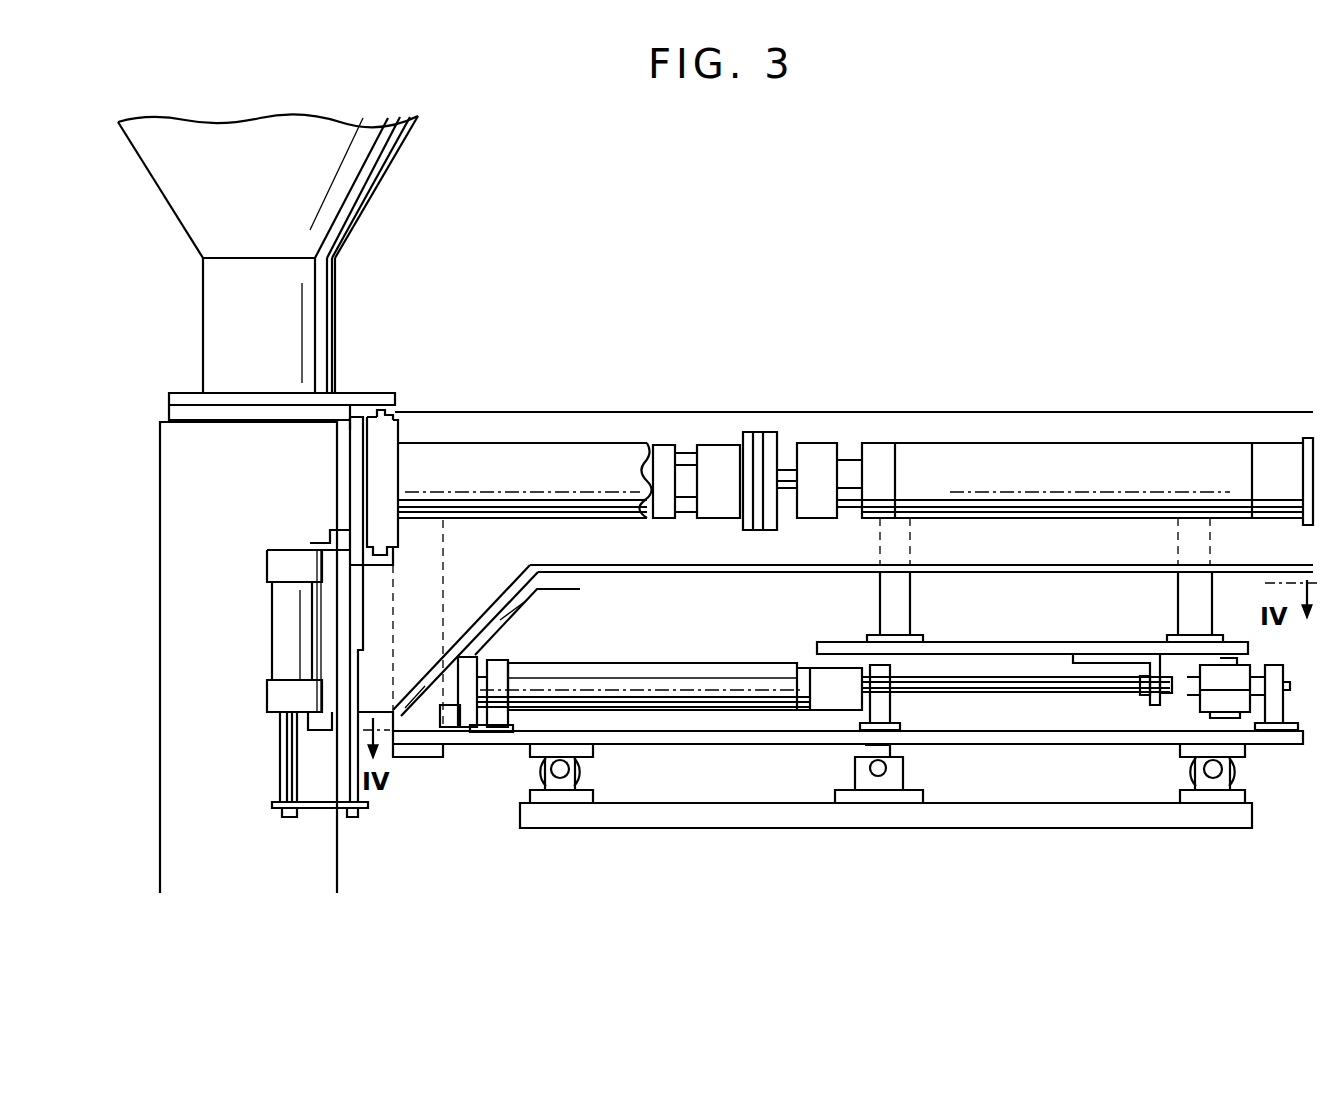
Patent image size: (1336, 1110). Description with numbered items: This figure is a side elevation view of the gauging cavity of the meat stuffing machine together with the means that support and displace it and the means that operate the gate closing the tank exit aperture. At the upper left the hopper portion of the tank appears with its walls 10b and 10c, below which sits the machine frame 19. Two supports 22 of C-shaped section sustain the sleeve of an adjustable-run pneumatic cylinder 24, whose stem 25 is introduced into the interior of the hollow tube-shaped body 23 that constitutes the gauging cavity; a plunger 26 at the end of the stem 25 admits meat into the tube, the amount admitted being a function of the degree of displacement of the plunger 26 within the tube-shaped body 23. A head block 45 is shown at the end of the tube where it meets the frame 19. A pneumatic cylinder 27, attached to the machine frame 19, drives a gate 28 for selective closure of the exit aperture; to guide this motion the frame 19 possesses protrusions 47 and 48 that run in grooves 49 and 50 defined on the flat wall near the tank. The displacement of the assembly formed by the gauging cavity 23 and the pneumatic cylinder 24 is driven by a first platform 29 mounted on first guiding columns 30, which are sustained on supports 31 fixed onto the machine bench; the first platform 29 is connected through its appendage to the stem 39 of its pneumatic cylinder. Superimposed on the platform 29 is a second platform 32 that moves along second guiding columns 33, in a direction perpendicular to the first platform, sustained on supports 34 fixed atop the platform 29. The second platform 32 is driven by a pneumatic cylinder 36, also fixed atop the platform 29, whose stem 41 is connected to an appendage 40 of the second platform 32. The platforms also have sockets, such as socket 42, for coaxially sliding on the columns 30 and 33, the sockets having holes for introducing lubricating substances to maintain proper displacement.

The hopper 10b is at (372, 162).
The hopper neck 10c is at (327, 283).
The machine frame 19 is at (178, 522).
The supports 22 is at (890, 585).
The tube-shaped body 23 is at (540, 450).
The adjustable-run pneumatic cylinder 24 is at (1015, 462).
The stem 25 is at (718, 456).
The plunger 26 is at (688, 456).
The pneumatic cylinder 27 is at (283, 620).
The gate 28 is at (360, 603).
The first platform 29 is at (1043, 740).
The first guiding columns 30 is at (572, 770).
The supports 31 is at (530, 790).
The second platform 32 is at (1035, 642).
The second guiding columns 33 is at (600, 683).
The supports 34 is at (497, 673).
The pneumatic cylinder 36 is at (695, 665).
The stem 39 is at (858, 766).
The appendage 40 is at (1105, 657).
The stem 41 is at (968, 678).
The socket 42 is at (1233, 693).
The nozzle block 45 is at (393, 467).
The protrusion 47 is at (377, 545).
The protrusion 48 is at (380, 410).
The groove 49 is at (385, 553).
The groove 50 is at (395, 410).